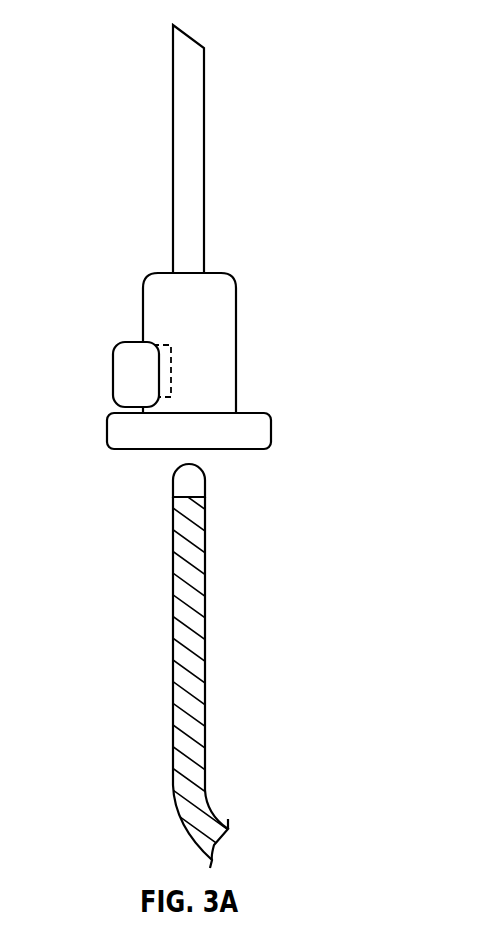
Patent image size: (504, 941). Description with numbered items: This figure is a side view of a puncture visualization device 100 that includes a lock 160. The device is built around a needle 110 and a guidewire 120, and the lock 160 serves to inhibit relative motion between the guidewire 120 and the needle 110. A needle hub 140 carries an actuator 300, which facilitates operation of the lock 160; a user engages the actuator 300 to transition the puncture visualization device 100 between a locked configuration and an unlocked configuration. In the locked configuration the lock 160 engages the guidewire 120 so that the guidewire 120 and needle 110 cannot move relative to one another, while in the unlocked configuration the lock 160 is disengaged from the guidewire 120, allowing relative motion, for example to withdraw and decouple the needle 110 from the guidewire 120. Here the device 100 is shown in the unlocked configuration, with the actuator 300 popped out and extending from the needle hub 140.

The puncture visualization device 100 is at (132, 94).
The needle 110 is at (182, 170).
The guidewire 120 is at (187, 655).
The needle hub 140 is at (220, 358).
The lock 160 is at (160, 352).
The actuator 300 is at (115, 383).